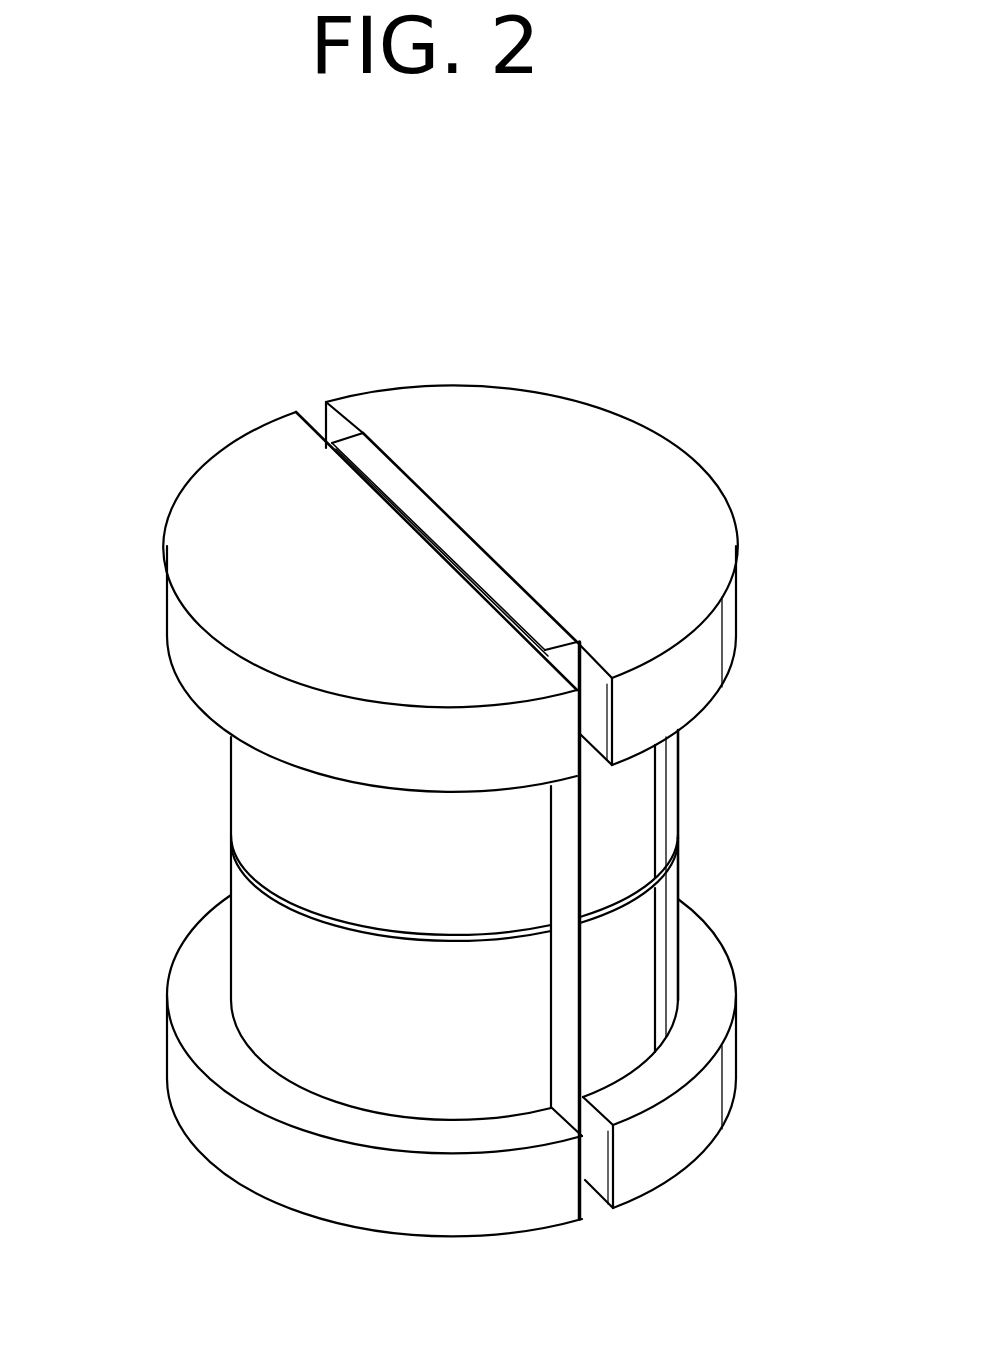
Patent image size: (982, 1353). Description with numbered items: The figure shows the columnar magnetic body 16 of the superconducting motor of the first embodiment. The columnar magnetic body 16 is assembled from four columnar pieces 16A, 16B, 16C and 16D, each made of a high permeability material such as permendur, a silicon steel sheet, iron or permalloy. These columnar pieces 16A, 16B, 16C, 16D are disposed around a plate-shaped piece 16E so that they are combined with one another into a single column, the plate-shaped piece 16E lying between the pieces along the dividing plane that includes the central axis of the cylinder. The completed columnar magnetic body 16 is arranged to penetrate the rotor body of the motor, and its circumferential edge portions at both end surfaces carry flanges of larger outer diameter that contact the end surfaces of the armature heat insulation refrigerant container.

The columnar magnetic body 16 is at (702, 382).
The columnar piece 16A is at (643, 777).
The columnar piece 16B is at (245, 782).
The columnar piece 16C is at (645, 942).
The columnar piece 16D is at (255, 960).
The plate-shaped piece 16E is at (400, 495).